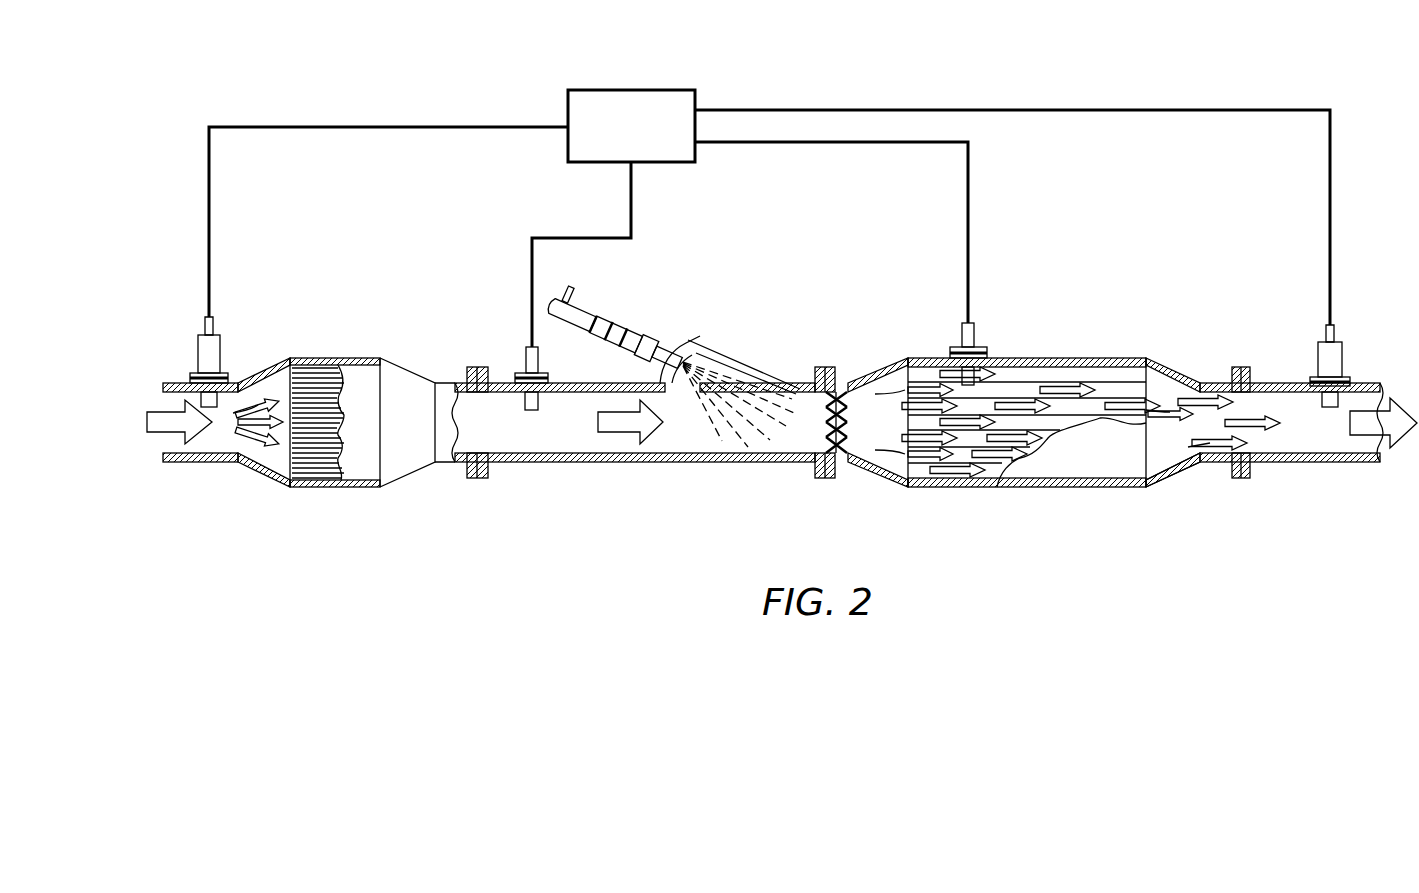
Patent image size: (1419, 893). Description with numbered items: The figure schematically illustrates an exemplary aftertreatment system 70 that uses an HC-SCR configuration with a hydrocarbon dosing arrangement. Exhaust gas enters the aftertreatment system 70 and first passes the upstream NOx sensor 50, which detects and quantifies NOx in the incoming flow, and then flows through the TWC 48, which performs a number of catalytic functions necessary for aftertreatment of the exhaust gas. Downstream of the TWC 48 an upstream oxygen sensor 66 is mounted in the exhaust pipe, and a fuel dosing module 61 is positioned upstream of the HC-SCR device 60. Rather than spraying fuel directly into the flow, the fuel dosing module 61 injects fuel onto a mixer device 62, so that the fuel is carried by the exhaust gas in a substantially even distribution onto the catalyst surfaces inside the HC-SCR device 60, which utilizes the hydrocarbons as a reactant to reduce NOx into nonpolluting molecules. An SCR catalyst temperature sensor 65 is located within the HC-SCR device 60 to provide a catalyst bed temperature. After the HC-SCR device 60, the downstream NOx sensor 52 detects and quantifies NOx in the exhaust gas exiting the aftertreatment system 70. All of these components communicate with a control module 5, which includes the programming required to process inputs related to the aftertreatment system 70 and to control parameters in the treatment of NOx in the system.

The control module 5 is at (640, 140).
The TWC 48 is at (358, 372).
The upstream NOx sensor 50 is at (203, 356).
The downstream NOx sensor 52 is at (1335, 360).
The HC-SCR device 60 is at (1015, 390).
The fuel dosing module 61 is at (620, 335).
The mixer device 62 is at (848, 420).
The SCR catalyst temperature sensor 65 is at (968, 345).
The upstream oxygen sensor 66 is at (530, 357).
The aftertreatment system 70 is at (222, 264).